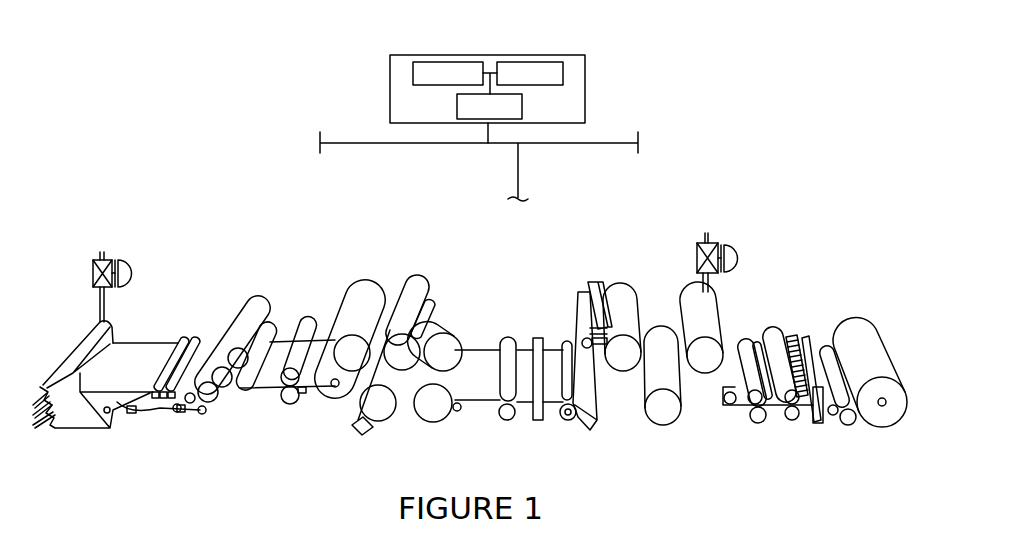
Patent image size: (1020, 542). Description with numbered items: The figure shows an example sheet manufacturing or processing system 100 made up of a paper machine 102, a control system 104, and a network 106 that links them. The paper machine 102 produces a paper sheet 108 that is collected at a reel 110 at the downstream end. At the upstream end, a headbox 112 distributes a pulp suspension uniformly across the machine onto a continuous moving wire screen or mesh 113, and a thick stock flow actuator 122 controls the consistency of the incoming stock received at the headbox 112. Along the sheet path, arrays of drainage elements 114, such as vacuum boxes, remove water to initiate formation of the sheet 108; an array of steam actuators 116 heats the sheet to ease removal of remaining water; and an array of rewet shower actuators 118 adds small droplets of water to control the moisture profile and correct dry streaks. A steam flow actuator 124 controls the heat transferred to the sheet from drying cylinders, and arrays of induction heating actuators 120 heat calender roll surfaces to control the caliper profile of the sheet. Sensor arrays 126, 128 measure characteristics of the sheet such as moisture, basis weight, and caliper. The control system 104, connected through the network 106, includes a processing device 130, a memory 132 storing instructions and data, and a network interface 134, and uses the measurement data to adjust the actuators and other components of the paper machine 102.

The sheet manufacturing or processing system 100 is at (226, 76).
The paper machine 102 is at (270, 246).
The control system 104 is at (588, 89).
The network 106 is at (383, 146).
The paper sheet 108 is at (266, 392).
The reel 110 is at (889, 428).
The headbox 112 is at (63, 345).
The wire screen or mesh 113 is at (141, 413).
The drainage elements 114 is at (229, 401).
The steam actuators 116 is at (364, 440).
The rewet shower actuators 118 is at (595, 276).
The induction heating actuators 120 is at (739, 429).
The thick stock flow actuator 122 is at (117, 251).
The steam flow actuator 124 is at (720, 241).
The sensor array 126 is at (541, 425).
The sensor array 128 is at (802, 333).
The processing device 130 is at (466, 84).
The memory 132 is at (548, 84).
The network interface 134 is at (508, 117).